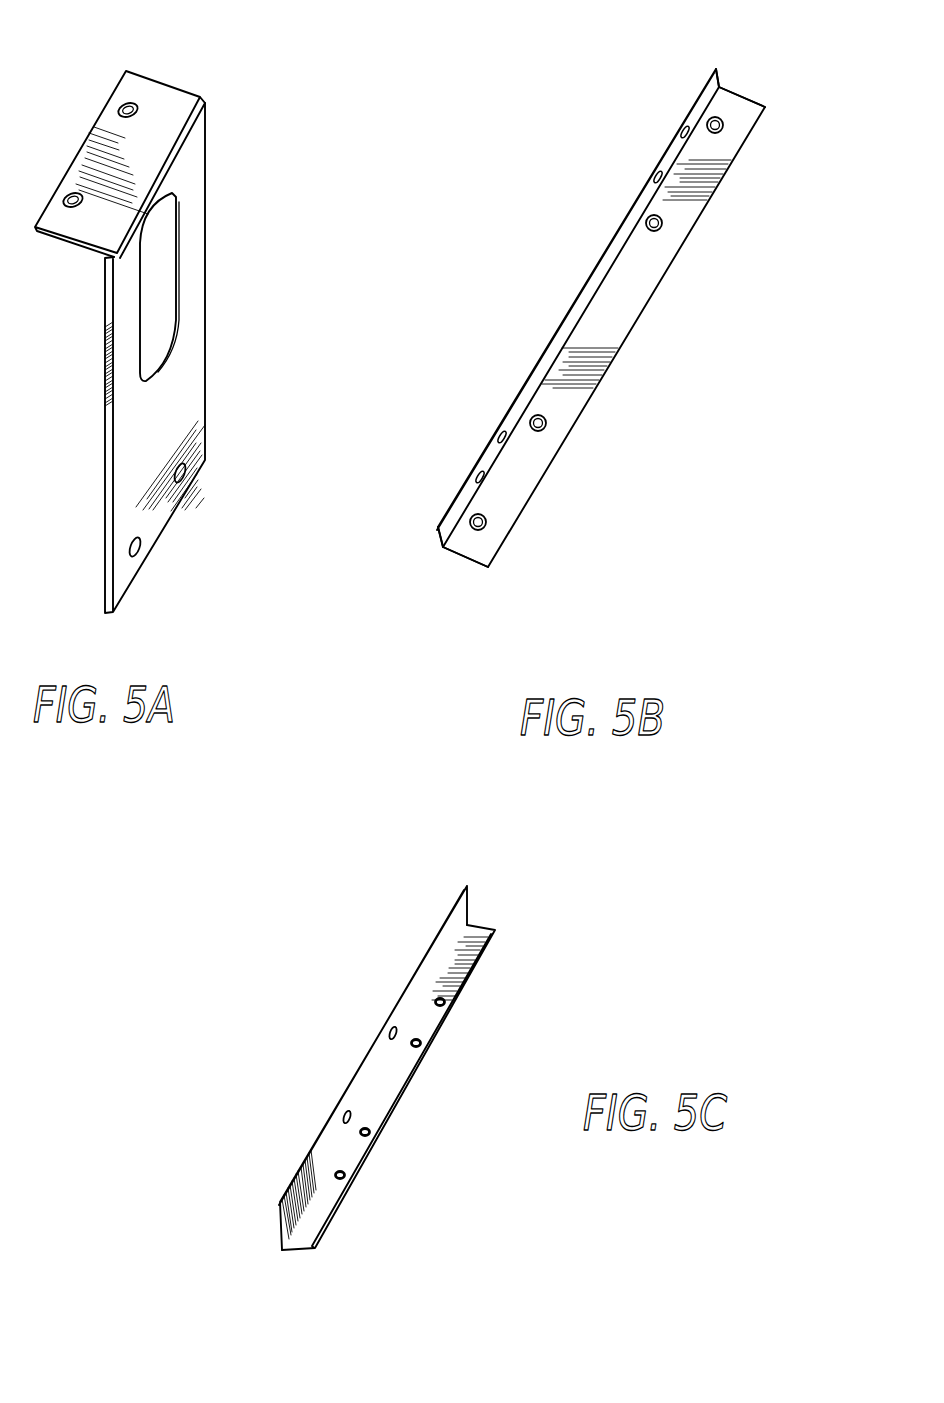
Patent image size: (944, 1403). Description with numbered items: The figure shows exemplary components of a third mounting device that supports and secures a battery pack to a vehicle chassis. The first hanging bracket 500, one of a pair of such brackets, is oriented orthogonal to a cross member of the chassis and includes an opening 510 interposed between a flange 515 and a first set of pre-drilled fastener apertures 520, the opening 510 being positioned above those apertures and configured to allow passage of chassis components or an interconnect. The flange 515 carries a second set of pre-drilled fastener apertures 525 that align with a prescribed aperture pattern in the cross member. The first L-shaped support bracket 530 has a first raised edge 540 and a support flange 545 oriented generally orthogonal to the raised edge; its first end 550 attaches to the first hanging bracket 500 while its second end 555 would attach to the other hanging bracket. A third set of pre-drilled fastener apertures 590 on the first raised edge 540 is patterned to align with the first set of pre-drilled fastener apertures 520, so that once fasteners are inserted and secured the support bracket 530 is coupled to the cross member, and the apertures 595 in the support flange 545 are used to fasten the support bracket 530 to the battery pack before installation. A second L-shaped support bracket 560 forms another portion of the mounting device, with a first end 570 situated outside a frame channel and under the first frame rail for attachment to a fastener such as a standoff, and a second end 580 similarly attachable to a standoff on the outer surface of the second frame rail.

In FIG. 5A, the first hanging bracket 500 is at (157, 311).
In FIG. 5A, the opening 510 is at (156, 272).
In FIG. 5A, the flange 515 is at (111, 133).
In FIG. 5A, the first set of pre-drilled fastener apertures 520 is at (201, 358).
In FIG. 5A, the second set of pre-drilled fastener apertures 525 is at (72, 194).
In FIG. 5B, the first L-shaped support bracket 530 is at (634, 327).
In FIG. 5B, the first raised edge 540 is at (567, 283).
In FIG. 5B, the support flange 545 is at (743, 112).
In FIG. 5B, the first end 550 is at (635, 327).
In FIG. 5B, the second end 555 is at (512, 479).
In FIG. 5B, the third set of pre-drilled fastener apertures 590 is at (660, 172).
In FIG. 5B, the apertures 595 is at (664, 215).
In FIG. 5C, the L-shaped support bracket 560 is at (355, 1065).
In FIG. 5C, the first end 570 is at (490, 856).
In FIG. 5C, the second end 580 is at (295, 1262).